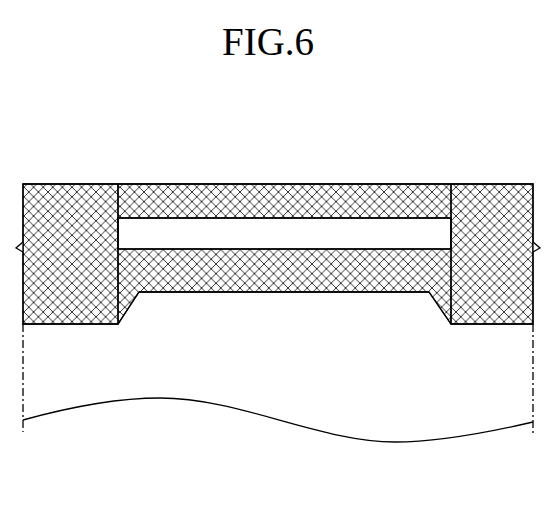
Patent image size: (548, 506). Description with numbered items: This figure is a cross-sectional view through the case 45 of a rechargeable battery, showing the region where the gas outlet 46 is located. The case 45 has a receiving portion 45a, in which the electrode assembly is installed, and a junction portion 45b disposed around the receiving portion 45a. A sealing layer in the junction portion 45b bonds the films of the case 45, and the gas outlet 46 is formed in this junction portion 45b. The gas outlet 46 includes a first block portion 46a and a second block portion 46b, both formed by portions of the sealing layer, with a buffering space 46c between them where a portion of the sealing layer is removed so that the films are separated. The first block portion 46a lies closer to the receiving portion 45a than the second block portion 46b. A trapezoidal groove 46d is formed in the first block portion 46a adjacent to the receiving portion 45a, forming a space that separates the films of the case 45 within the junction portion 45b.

The case 45 is at (130, 178).
The receiving portion 45a is at (468, 418).
The junction portion 45b is at (495, 195).
The gas outlet 46 is at (451, 195).
The first block portion 46a is at (293, 283).
The second block portion 46b is at (348, 195).
The buffering space 46c is at (250, 225).
The trapezoidal groove 46d is at (385, 292).